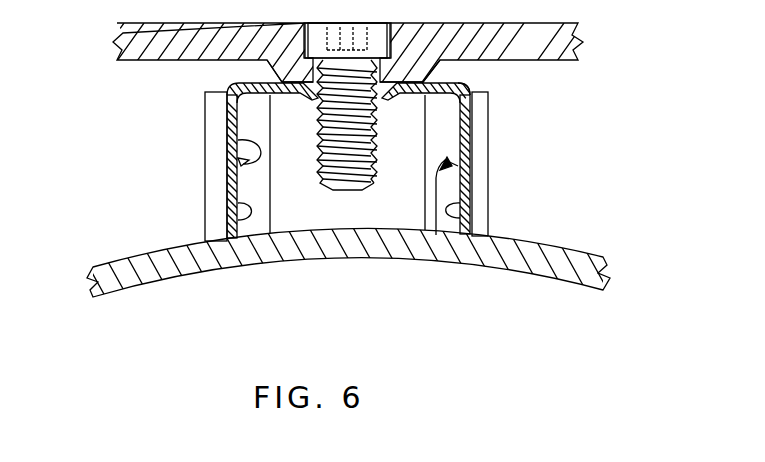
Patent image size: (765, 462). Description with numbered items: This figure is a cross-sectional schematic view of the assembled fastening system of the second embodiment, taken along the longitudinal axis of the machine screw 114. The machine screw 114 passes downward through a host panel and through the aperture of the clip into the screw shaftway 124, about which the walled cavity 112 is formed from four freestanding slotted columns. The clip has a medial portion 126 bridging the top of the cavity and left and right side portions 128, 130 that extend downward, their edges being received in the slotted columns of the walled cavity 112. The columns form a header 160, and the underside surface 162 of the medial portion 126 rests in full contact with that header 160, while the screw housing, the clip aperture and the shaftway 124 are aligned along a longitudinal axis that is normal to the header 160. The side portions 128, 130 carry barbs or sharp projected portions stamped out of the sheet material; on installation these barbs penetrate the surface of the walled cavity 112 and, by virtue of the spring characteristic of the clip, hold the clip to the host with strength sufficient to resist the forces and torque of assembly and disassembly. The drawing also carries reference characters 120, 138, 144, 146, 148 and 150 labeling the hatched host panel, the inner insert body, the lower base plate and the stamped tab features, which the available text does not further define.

The walled cavity 112 is at (501, 193).
The machine screw 114 is at (388, 145).
The upper panel 120 is at (557, 60).
The screw shaftway 124 is at (347, 205).
The medial portion 126 is at (285, 82).
The side portion 128 is at (462, 156).
The side portion 130 is at (226, 185).
The insert body 138 is at (310, 131).
The base plate 144 is at (470, 230).
The lower retaining tab 146 is at (240, 227).
The spring finger 148 is at (436, 235).
The upper retaining tab 150 is at (228, 149).
The header 160 is at (205, 93).
The underside surface 162 is at (434, 104).